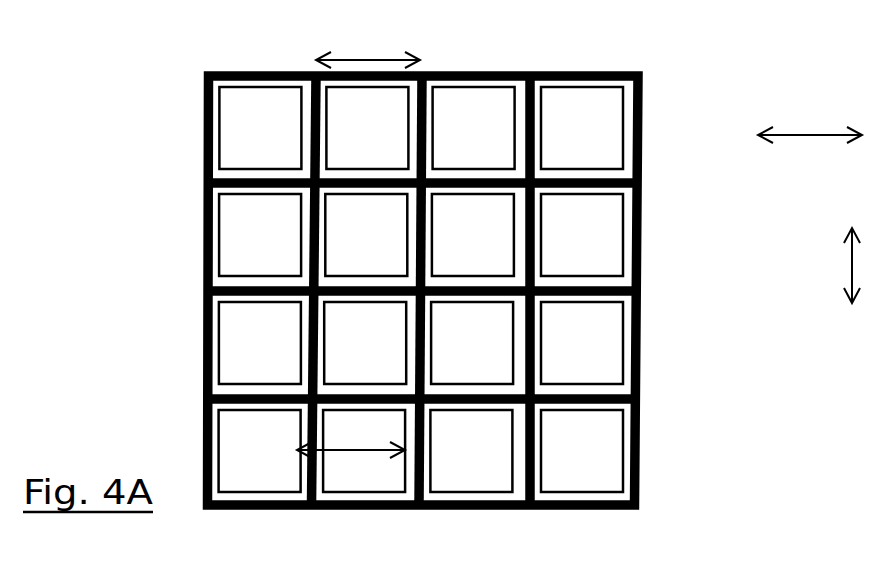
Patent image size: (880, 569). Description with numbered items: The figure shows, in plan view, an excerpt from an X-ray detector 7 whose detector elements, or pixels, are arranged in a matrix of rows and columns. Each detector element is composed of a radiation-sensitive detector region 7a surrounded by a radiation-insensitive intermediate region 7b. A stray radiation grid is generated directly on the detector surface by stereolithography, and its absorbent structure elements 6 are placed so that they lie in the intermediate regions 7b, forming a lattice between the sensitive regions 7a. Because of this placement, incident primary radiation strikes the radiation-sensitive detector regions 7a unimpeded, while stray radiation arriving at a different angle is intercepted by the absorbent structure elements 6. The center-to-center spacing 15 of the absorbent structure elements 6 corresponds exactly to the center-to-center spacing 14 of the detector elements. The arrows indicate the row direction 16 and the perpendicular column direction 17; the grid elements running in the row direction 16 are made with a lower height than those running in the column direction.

The absorbent structure elements 6 is at (643, 283).
The X-ray detector 7 is at (663, 72).
The radiation-sensitive detector regions 7a is at (608, 452).
The radiation-insensitive intermediate regions 7b is at (608, 407).
The center-to-center spacing of the detector elements 14 is at (343, 453).
The center-to-center spacing of the absorbent structure elements 15 is at (368, 37).
The row direction 16 is at (810, 158).
The vertical direction 17 is at (825, 265).